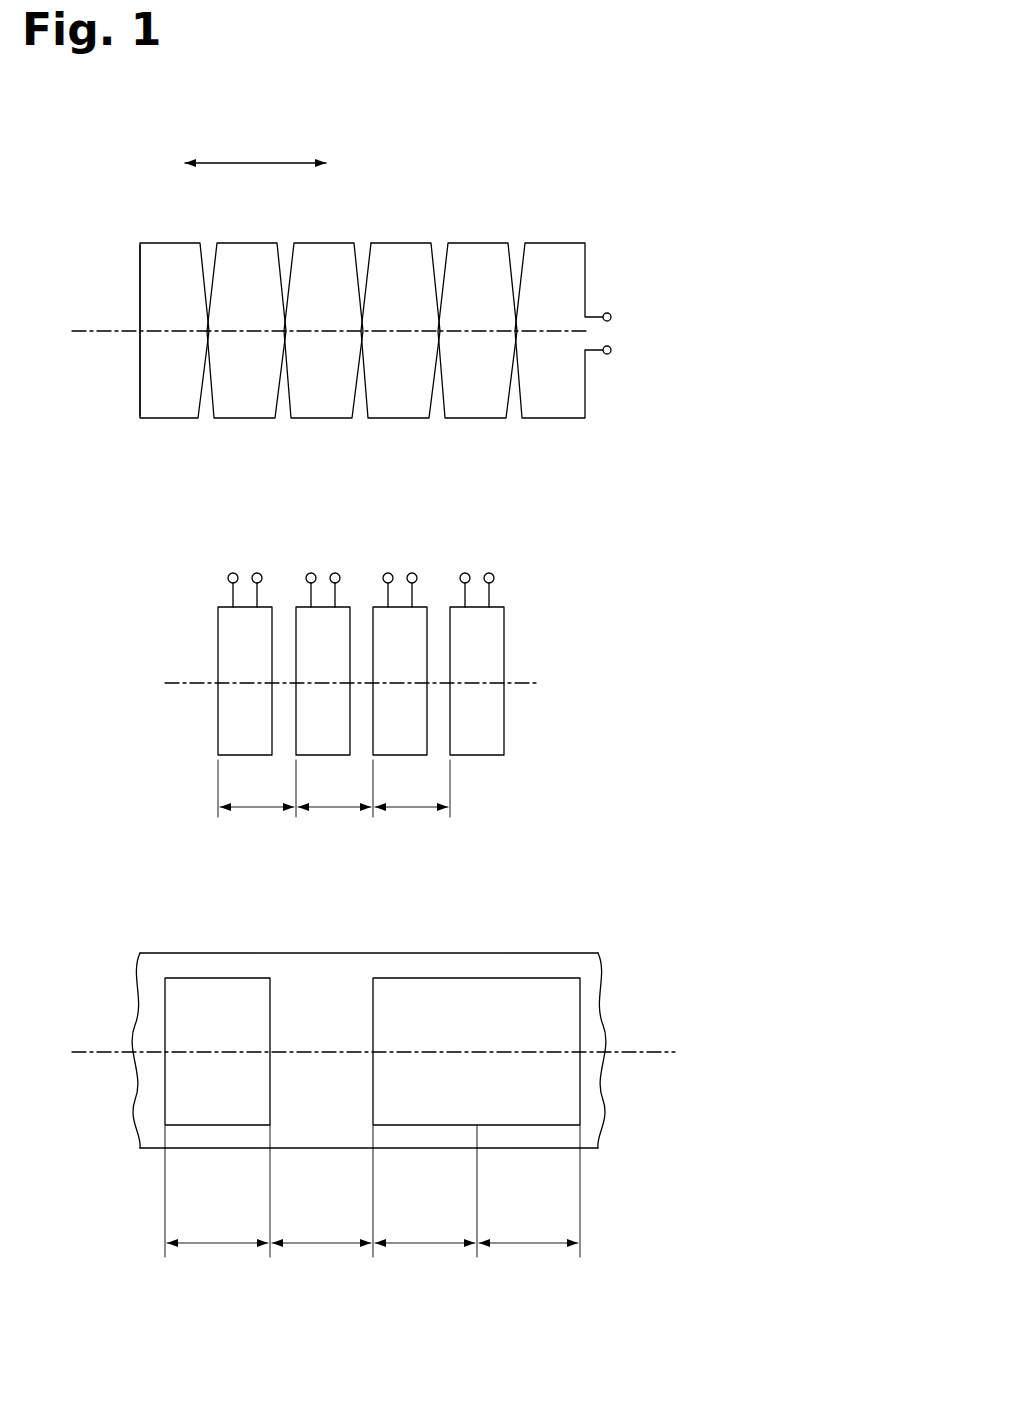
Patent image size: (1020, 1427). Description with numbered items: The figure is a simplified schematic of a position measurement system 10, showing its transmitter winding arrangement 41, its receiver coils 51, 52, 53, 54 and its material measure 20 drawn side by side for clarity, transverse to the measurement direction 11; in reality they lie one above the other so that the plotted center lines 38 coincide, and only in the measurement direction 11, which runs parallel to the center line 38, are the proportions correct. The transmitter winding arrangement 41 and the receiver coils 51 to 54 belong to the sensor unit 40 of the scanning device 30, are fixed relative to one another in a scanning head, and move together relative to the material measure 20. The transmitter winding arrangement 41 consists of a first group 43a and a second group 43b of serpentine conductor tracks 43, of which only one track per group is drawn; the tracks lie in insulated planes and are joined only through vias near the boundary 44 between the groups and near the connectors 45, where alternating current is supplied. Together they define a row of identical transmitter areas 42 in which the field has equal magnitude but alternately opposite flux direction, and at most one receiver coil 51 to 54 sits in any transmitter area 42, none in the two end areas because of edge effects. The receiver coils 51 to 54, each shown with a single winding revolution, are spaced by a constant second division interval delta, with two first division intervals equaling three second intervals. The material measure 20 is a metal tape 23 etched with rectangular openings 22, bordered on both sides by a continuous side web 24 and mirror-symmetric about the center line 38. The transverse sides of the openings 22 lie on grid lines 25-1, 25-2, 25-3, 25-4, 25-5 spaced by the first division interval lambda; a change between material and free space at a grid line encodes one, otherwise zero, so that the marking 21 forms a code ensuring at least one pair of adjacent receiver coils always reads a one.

The position measurement system 10 is at (757, 149).
The measurement direction 11 is at (257, 162).
The material measure 20 is at (596, 1140).
The marking 21 is at (656, 1289).
The opening 22 is at (228, 977).
The metal tape 23 is at (558, 967).
The side web 24 is at (178, 966).
The grid line of the marking grid 25-1 is at (163, 1181).
The grid line of the marking grid 25-2 is at (267, 1181).
The grid line of the marking grid 25-3 is at (370, 1181).
The grid line of the marking grid 25-4 is at (474, 1181).
The grid line of the marking grid 25-5 is at (578, 1181).
The scanning device 30 is at (447, 447).
The center line 38 is at (92, 328).
The sensor unit 40 is at (734, 243).
The transmitter winding arrangement 41 is at (630, 187).
The transmitter area 42 is at (396, 333).
The serpentine conductor track 43 is at (406, 333).
The first group 43a is at (403, 242).
The second group 43b is at (400, 419).
The boundary between the two groups of serpentine conductor tracks 44 is at (139, 331).
The terminal of the transmitter winding arrangement 45 is at (608, 313).
The first receiver coil 51 is at (262, 659).
The second receiver coil 52 is at (340, 659).
The third receiver coil 53 is at (417, 659).
The fourth receiver coil 54 is at (494, 659).